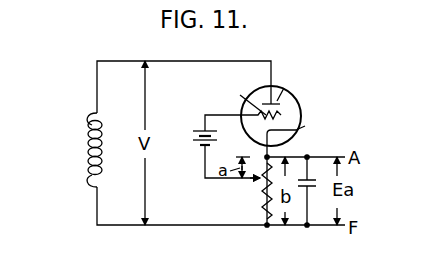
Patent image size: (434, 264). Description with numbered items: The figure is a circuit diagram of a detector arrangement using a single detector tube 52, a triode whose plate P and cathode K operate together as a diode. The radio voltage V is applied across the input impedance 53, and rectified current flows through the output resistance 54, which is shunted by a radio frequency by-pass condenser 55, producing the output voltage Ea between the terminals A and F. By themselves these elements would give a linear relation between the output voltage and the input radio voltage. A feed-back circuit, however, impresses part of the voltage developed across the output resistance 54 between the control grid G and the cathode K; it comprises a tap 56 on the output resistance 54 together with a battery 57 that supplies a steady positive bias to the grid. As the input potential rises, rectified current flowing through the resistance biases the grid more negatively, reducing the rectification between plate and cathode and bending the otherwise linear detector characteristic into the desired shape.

The detector tube 52 is at (297, 104).
The input impedance 53 is at (86, 156).
The output resistance 54 is at (262, 210).
The radio frequency by-pass condenser 55 is at (311, 190).
The tap 56 is at (262, 184).
The battery 57 is at (196, 148).